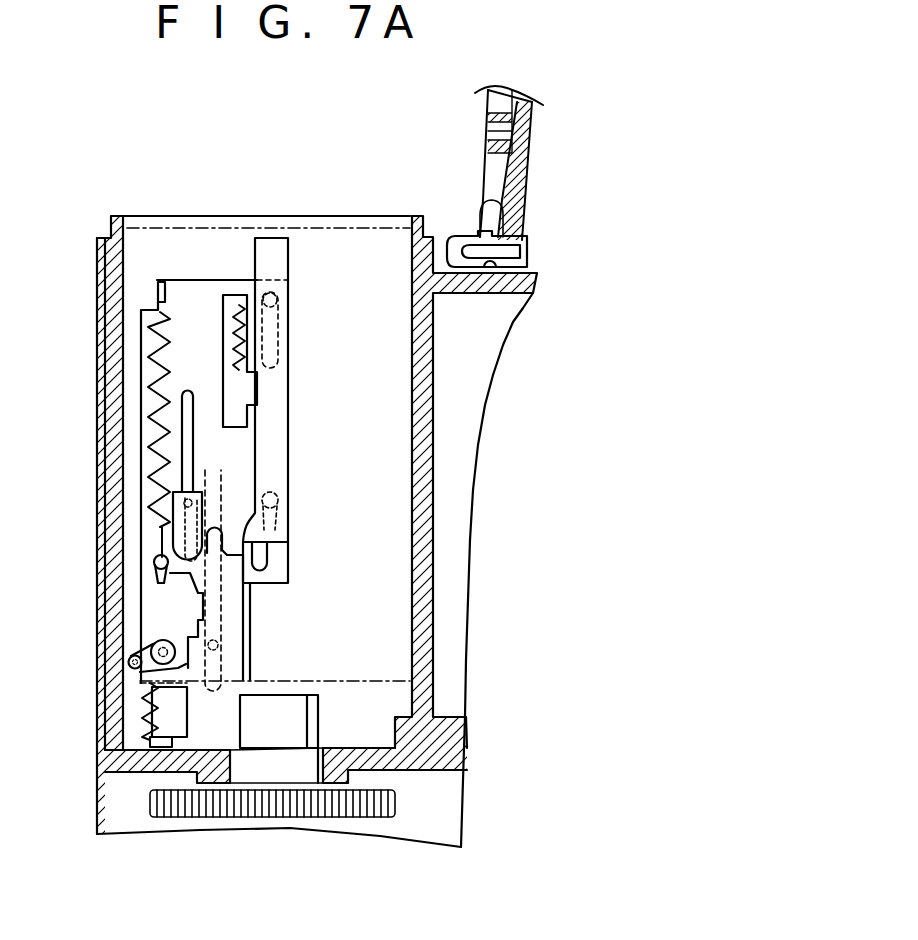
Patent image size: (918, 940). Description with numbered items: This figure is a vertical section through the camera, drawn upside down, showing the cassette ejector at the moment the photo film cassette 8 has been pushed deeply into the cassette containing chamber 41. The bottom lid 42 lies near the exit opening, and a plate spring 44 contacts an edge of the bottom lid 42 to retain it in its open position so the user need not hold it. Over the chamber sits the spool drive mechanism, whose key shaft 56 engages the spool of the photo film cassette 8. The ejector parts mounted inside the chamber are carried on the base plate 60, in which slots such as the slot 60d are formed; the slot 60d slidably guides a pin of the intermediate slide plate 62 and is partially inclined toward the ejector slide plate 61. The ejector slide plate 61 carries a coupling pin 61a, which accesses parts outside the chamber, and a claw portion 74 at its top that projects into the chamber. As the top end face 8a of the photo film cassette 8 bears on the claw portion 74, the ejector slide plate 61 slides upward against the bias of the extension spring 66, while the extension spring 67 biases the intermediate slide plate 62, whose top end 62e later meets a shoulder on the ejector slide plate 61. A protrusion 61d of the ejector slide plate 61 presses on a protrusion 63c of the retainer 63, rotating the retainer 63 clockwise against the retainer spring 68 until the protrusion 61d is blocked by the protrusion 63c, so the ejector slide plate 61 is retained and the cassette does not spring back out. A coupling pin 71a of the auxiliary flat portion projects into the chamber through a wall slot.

The photo film cassette 8 is at (295, 228).
The top end face 8a is at (335, 682).
The cassette containing chamber 41 is at (397, 345).
The bottom lid 42 is at (536, 157).
The plate spring 44 is at (527, 236).
The key shaft 56 is at (315, 730).
The base plate 60 is at (272, 590).
The slot 60d is at (262, 562).
The ejector slide plate 61 is at (248, 619).
The coupling pin 61a is at (198, 490).
The protrusion 61d is at (188, 690).
The intermediate slide plate 62 is at (300, 266).
The top end 62e is at (280, 527).
The retainer 63 is at (128, 663).
The protrusion 63c is at (180, 620).
The extension spring 66 is at (152, 330).
The extension spring 67 is at (223, 332).
The retainer spring 68 is at (142, 697).
The coupling pin 71a is at (209, 522).
The claw portion 74 is at (242, 697).